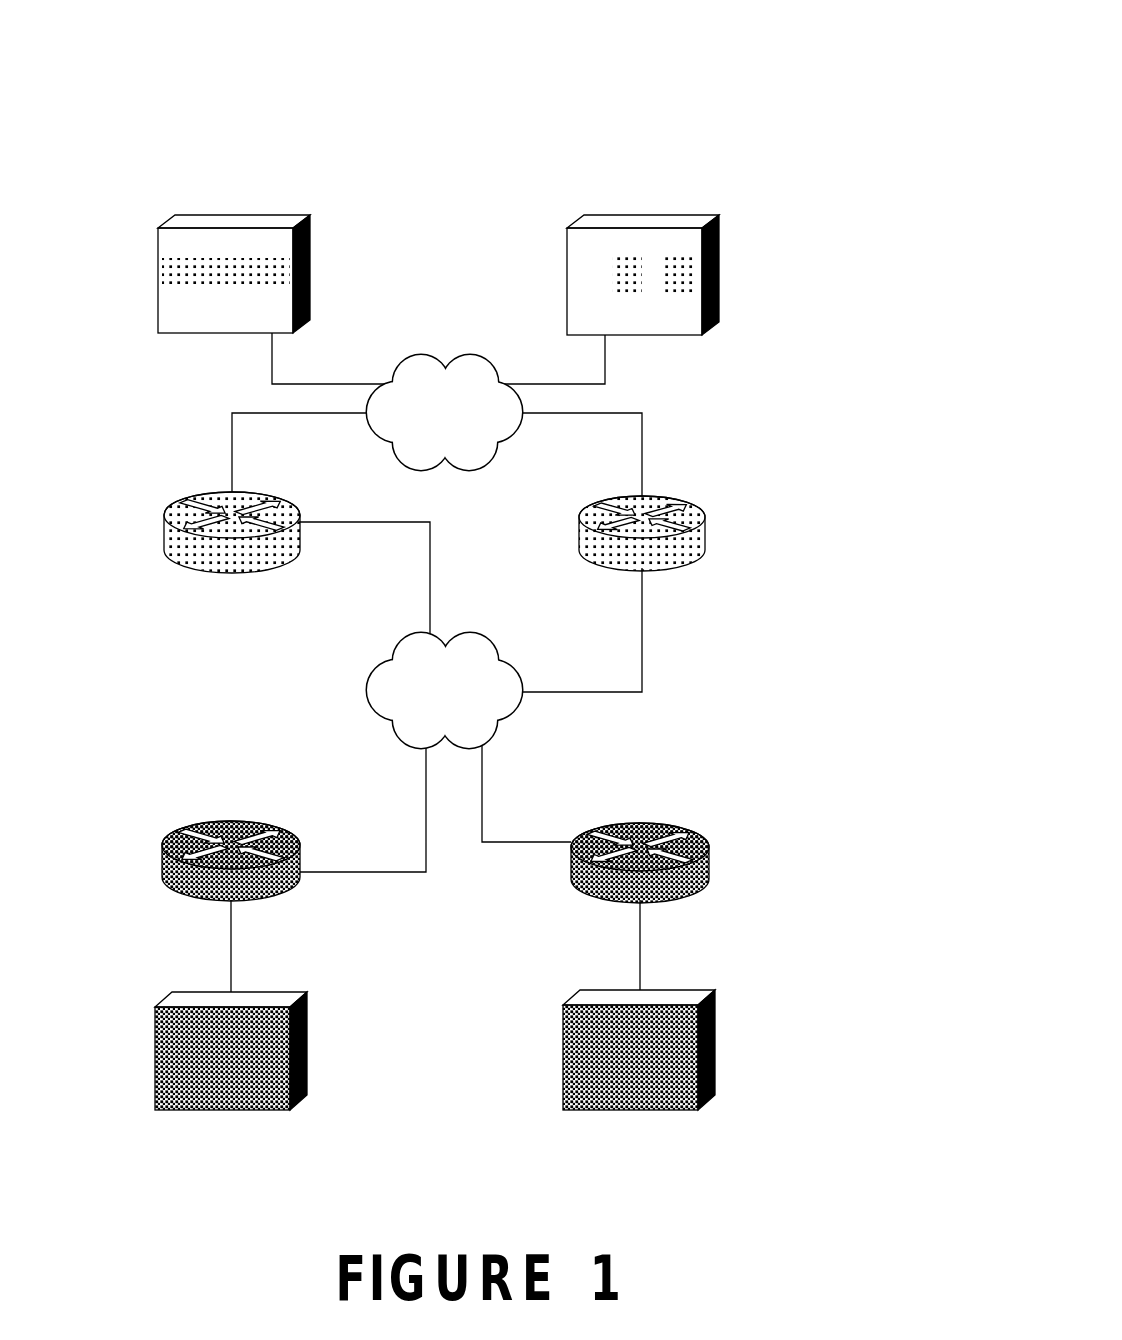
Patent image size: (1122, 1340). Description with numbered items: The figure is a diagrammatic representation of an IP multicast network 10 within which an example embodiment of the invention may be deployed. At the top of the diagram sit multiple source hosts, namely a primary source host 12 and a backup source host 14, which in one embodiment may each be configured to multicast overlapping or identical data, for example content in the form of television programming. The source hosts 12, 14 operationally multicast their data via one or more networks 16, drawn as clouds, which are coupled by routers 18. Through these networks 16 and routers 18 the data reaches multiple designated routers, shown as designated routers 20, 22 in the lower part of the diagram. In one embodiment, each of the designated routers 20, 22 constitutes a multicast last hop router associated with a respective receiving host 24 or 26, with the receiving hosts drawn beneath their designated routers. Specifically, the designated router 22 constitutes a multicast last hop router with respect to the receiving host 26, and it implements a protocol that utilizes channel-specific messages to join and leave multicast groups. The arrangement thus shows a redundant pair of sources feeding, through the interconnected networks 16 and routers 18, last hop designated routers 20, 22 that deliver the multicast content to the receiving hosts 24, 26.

The IP multicast network 10 is at (814, 120).
The primary source host 12 is at (185, 215).
The backup source host 14 is at (580, 215).
The networks 16 is at (484, 468).
The routers 18 is at (165, 525).
The designated router 20 is at (163, 858).
The designated router 22 is at (710, 840).
The receiving host 24 is at (155, 1020).
The receiving host 26 is at (563, 1007).